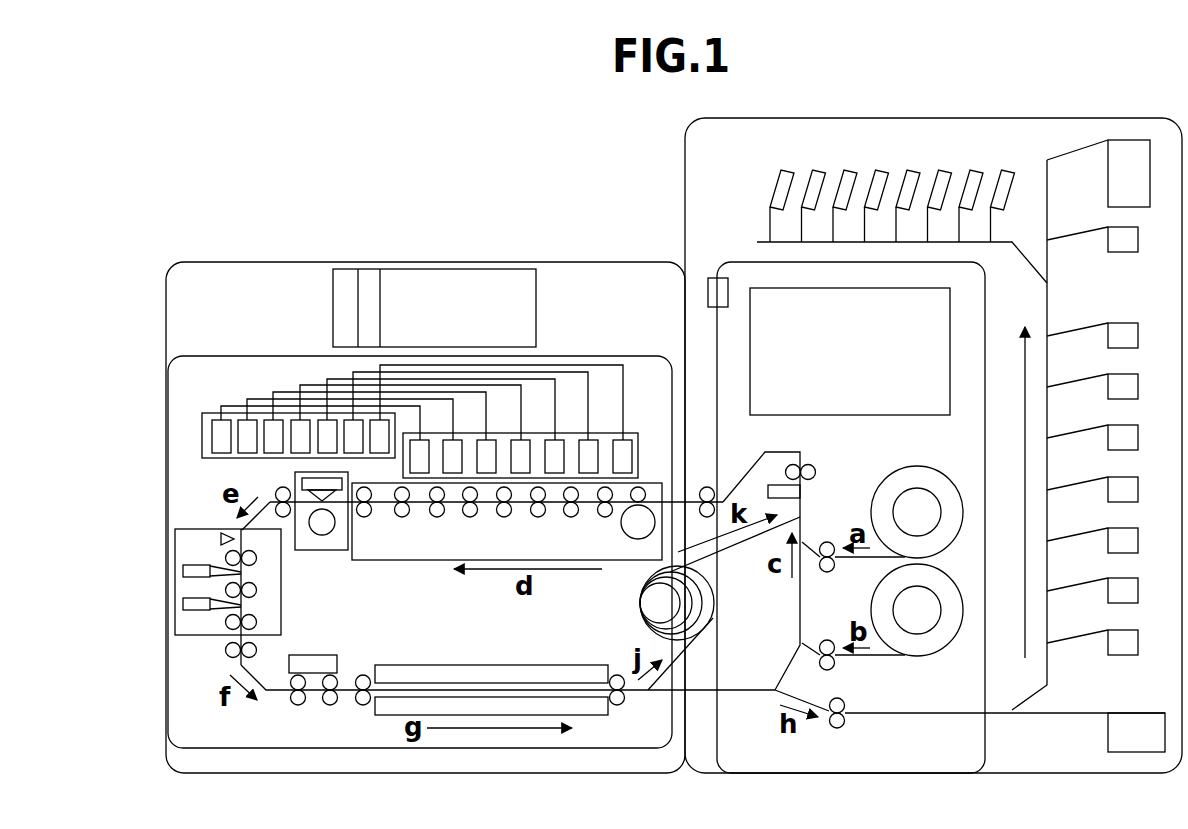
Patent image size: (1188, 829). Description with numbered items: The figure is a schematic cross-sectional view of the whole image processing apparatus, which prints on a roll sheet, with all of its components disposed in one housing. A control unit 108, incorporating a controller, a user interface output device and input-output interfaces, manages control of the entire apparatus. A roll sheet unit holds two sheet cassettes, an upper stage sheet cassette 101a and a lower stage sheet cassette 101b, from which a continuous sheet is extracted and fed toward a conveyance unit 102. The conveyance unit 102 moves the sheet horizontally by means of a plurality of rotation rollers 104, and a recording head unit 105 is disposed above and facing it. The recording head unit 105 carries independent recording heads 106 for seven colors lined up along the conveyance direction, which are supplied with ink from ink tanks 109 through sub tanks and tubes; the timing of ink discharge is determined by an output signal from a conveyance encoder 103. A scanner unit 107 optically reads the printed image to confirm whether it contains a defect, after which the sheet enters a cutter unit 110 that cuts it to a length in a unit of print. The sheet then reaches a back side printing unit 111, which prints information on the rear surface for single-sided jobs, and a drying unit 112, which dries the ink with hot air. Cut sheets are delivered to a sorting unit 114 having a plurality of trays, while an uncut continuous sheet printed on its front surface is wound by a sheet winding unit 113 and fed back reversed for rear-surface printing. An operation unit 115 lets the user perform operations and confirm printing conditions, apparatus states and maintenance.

The upper stage sheet cassette 101a is at (882, 511).
The lower stage sheet cassette 101b is at (890, 627).
The conveyance unit 102 is at (507, 546).
The conveyance encoder 103 is at (630, 536).
The rotation rollers 104 is at (364, 517).
The recording head unit 105 is at (638, 433).
The recording heads 106 is at (623, 440).
The scanner unit 107 is at (308, 551).
The control unit 108 is at (333, 320).
The ink tanks 109 is at (380, 420).
The cutter unit 110 is at (282, 628).
The back side printing unit 111 is at (338, 663).
The drying unit 112 is at (455, 665).
The sheet winding unit 113 is at (657, 610).
The sorting unit 114 is at (685, 200).
The operation unit 115 is at (838, 405).